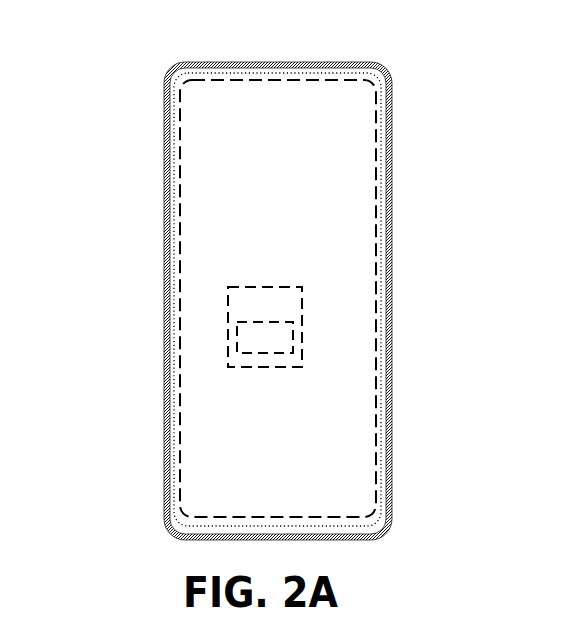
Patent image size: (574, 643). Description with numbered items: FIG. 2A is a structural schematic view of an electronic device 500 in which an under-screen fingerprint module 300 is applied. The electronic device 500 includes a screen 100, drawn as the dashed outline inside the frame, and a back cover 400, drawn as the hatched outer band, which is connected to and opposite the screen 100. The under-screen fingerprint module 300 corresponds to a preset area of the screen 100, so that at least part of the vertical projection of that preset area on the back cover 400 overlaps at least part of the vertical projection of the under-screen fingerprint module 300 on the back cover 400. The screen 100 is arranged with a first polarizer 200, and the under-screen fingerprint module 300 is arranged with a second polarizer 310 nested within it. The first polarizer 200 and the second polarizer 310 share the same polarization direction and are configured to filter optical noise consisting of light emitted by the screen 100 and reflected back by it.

The electronic device 500 is at (340, 45).
The back cover 400 is at (390, 161).
The screen 100 is at (353, 253).
The first polarizer 200 is at (375, 398).
The under-screen fingerprint module 300 is at (228, 296).
The second polarizer 310 is at (237, 347).